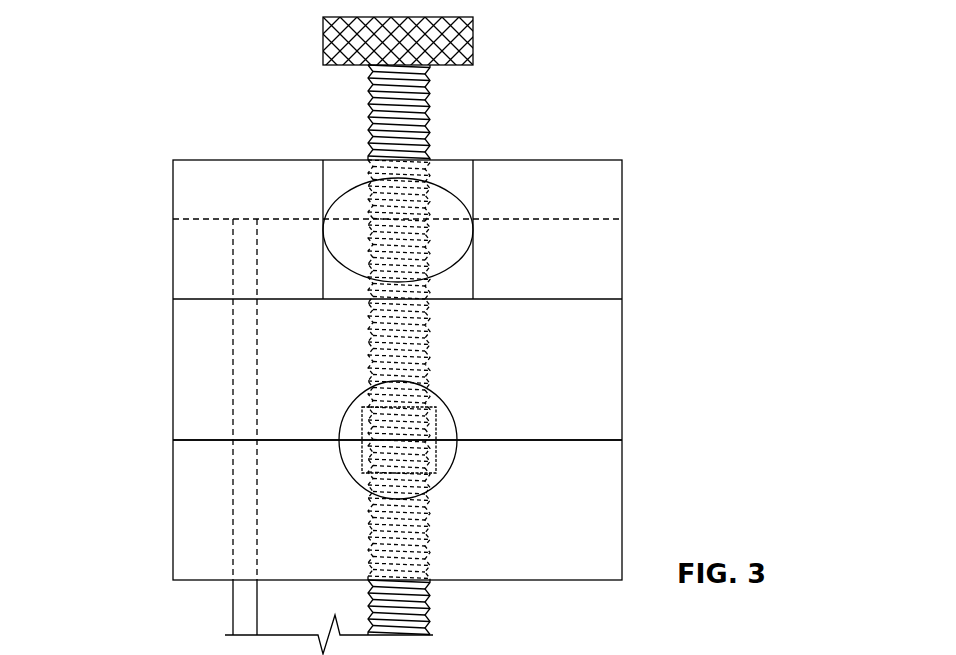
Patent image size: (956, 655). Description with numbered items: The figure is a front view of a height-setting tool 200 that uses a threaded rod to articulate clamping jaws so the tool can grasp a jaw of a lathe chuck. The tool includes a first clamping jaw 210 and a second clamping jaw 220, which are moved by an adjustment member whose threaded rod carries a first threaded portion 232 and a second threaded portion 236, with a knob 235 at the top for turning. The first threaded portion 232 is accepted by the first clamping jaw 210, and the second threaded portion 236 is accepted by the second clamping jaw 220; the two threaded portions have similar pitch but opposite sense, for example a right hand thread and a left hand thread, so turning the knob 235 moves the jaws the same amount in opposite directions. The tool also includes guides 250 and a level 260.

The height-setting tool 200 is at (647, 41).
The first clamping jaw 210 is at (193, 342).
The second clamping jaw 220 is at (193, 493).
The first threaded portion 232 is at (368, 117).
The knob 235 is at (474, 37).
The second threaded portion 236 is at (430, 597).
The guides 250 is at (233, 613).
The level 260 is at (583, 174).